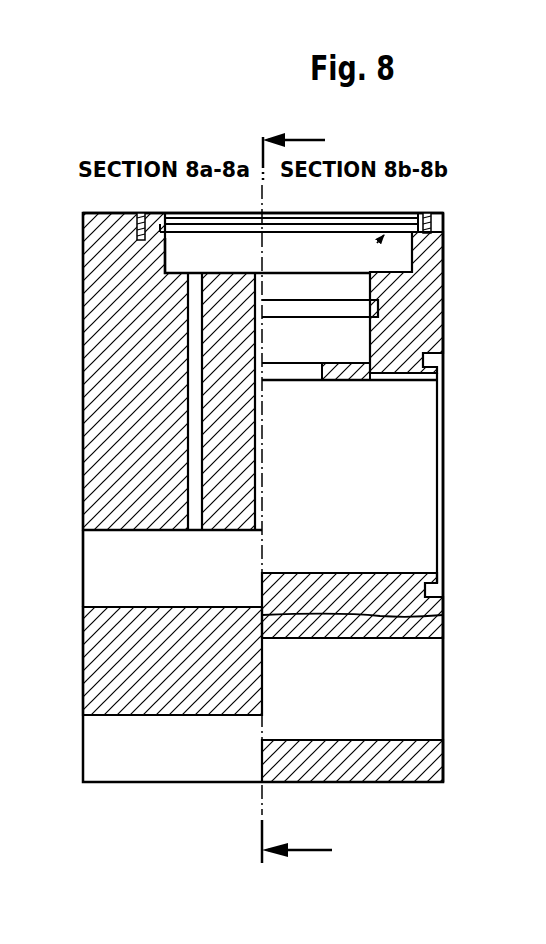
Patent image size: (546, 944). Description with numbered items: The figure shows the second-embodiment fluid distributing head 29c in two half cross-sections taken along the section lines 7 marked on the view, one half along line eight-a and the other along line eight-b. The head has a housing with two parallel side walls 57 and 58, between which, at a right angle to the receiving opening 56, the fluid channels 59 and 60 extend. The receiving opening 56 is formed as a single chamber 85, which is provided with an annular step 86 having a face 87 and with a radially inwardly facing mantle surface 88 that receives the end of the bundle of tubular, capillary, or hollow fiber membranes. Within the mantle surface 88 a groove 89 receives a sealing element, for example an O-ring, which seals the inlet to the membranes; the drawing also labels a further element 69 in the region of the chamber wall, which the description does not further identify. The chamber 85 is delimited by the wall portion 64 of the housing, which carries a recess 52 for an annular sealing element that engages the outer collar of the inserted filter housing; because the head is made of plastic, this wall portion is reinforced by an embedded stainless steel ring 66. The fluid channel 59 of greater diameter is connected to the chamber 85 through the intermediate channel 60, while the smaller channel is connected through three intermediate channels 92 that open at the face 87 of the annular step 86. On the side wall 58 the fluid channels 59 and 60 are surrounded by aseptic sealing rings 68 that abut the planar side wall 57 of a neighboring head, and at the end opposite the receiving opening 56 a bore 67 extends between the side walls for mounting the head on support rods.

The section line 7 is at (297, 501).
The fluid distributing head 29c is at (172, 141).
The recess 52 is at (165, 238).
The receiving opening 56 is at (403, 213).
The side wall 57 is at (78, 362).
The side wall 58 is at (447, 295).
The fluid channel 59 is at (403, 530).
The fluid channel 60 is at (103, 563).
The wall portion 64 is at (430, 250).
The stainless steel ring 66 is at (135, 224).
The bore 67 is at (418, 722).
The aseptic sealing ring 68 is at (437, 592).
The seal ring 69 is at (323, 374).
The chamber 85 is at (347, 338).
The annular step 86 is at (366, 268).
The face 87 is at (390, 270).
The mantle surface 88 is at (360, 367).
The groove 89 is at (363, 308).
The intermediate channel 92 is at (257, 460).